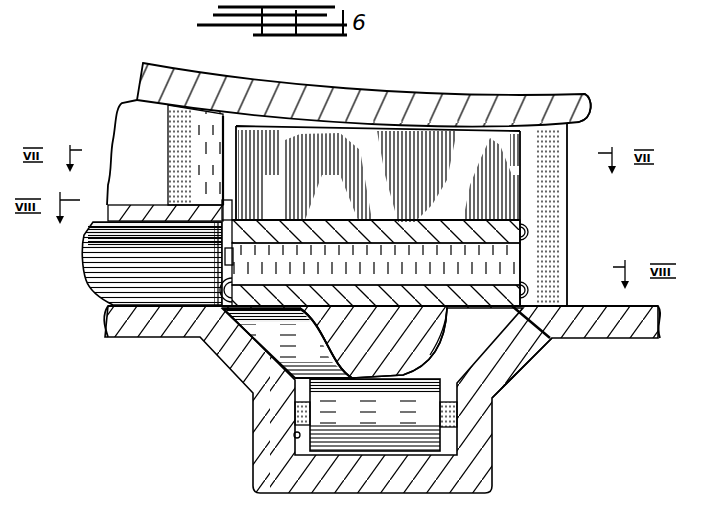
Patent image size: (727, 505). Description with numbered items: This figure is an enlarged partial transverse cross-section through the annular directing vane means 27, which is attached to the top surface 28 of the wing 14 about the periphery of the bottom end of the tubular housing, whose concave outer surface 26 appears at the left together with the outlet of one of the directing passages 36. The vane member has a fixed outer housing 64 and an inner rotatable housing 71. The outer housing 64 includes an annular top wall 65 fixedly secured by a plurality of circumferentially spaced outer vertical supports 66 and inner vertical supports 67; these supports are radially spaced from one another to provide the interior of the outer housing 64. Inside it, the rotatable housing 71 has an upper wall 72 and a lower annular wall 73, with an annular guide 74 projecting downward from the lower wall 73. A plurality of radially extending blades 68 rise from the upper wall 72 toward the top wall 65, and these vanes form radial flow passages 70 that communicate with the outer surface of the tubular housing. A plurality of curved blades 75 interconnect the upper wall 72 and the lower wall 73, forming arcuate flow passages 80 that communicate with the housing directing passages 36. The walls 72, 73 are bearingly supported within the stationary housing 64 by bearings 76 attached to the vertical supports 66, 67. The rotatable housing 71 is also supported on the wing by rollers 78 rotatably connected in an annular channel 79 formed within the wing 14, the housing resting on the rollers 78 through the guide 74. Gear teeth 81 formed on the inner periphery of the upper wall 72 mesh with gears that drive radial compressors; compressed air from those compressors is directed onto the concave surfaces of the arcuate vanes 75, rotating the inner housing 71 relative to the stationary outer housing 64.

The wing 14 is at (622, 343).
The concave outer surface 26 is at (130, 205).
The annular directing vane means 27 is at (594, 90).
The top surface 28 is at (645, 309).
The directing passages 36 is at (90, 293).
The fixed outer housing 64 is at (436, 86).
The annular top wall 65 is at (362, 100).
The outer vertical supports 66 is at (560, 181).
The inner vertical supports 67 is at (172, 126).
The radially extending blades 68 is at (305, 135).
The radial flow passages 70 is at (505, 221).
The inner rotatable housing 71 is at (514, 230).
The upper wall 72 is at (505, 254).
The lower annular wall 73 is at (537, 343).
The annular guide 74 is at (405, 344).
The curved blades 75 is at (510, 268).
The bearings 76 is at (527, 233).
The rollers 78 is at (408, 398).
The annular channel 79 is at (292, 436).
The arcuate flow passages 80 is at (445, 310).
The gear teeth 81 is at (235, 212).